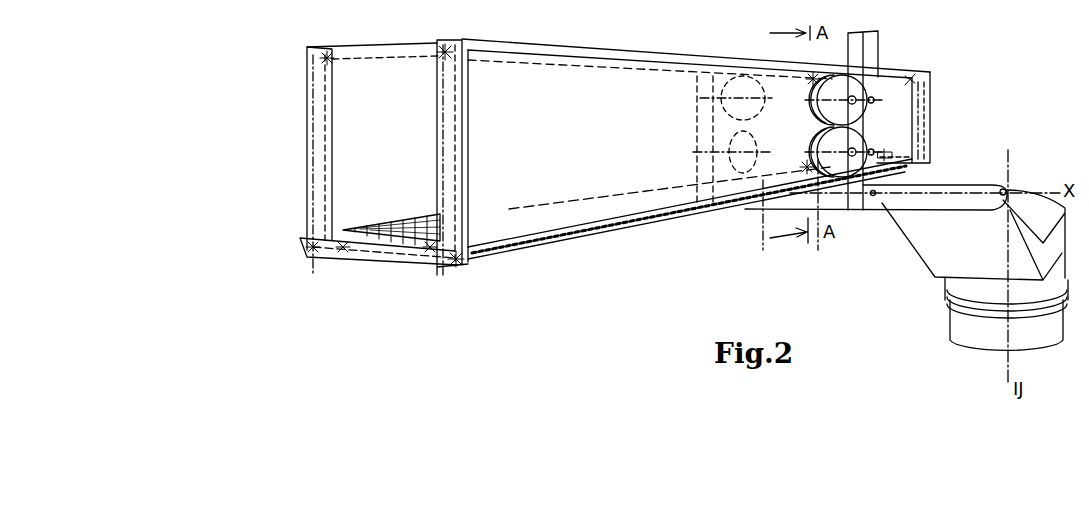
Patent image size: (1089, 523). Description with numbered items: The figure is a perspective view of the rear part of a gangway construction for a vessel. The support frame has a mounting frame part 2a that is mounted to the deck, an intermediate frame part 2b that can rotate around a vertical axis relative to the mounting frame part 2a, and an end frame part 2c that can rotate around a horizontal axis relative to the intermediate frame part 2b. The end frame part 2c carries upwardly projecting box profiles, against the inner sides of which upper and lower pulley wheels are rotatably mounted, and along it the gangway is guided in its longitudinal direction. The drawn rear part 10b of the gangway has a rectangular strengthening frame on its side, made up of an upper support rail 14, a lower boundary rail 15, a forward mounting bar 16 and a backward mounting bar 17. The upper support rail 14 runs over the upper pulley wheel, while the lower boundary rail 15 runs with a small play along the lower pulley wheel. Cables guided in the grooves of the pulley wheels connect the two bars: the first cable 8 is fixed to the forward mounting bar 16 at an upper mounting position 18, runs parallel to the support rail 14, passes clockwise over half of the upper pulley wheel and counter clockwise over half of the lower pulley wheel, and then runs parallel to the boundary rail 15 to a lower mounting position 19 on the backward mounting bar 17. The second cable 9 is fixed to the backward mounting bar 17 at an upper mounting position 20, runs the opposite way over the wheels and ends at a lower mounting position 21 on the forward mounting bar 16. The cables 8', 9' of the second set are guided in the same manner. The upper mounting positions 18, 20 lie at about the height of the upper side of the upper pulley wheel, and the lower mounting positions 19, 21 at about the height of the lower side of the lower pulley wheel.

The mounting frame part 2a is at (967, 330).
The intermediate frame part 2b is at (928, 238).
The end frame part 2c is at (866, 57).
The first cable 8 is at (734, 80).
The first cable 8' is at (379, 42).
The second cable 9 is at (725, 181).
The second cable 9' is at (669, 235).
The rear part 10b is at (573, 295).
The upper support rail 14 is at (689, 60).
The lower boundary rail 15 is at (675, 217).
The forward mounting bar 16 is at (466, 142).
The backward mounting bar 17 is at (932, 115).
The upper mounting position 18 is at (447, 50).
The lower mounting position 19 is at (914, 160).
The upper mounting position 20 is at (925, 78).
The lower mounting position 21 is at (456, 262).